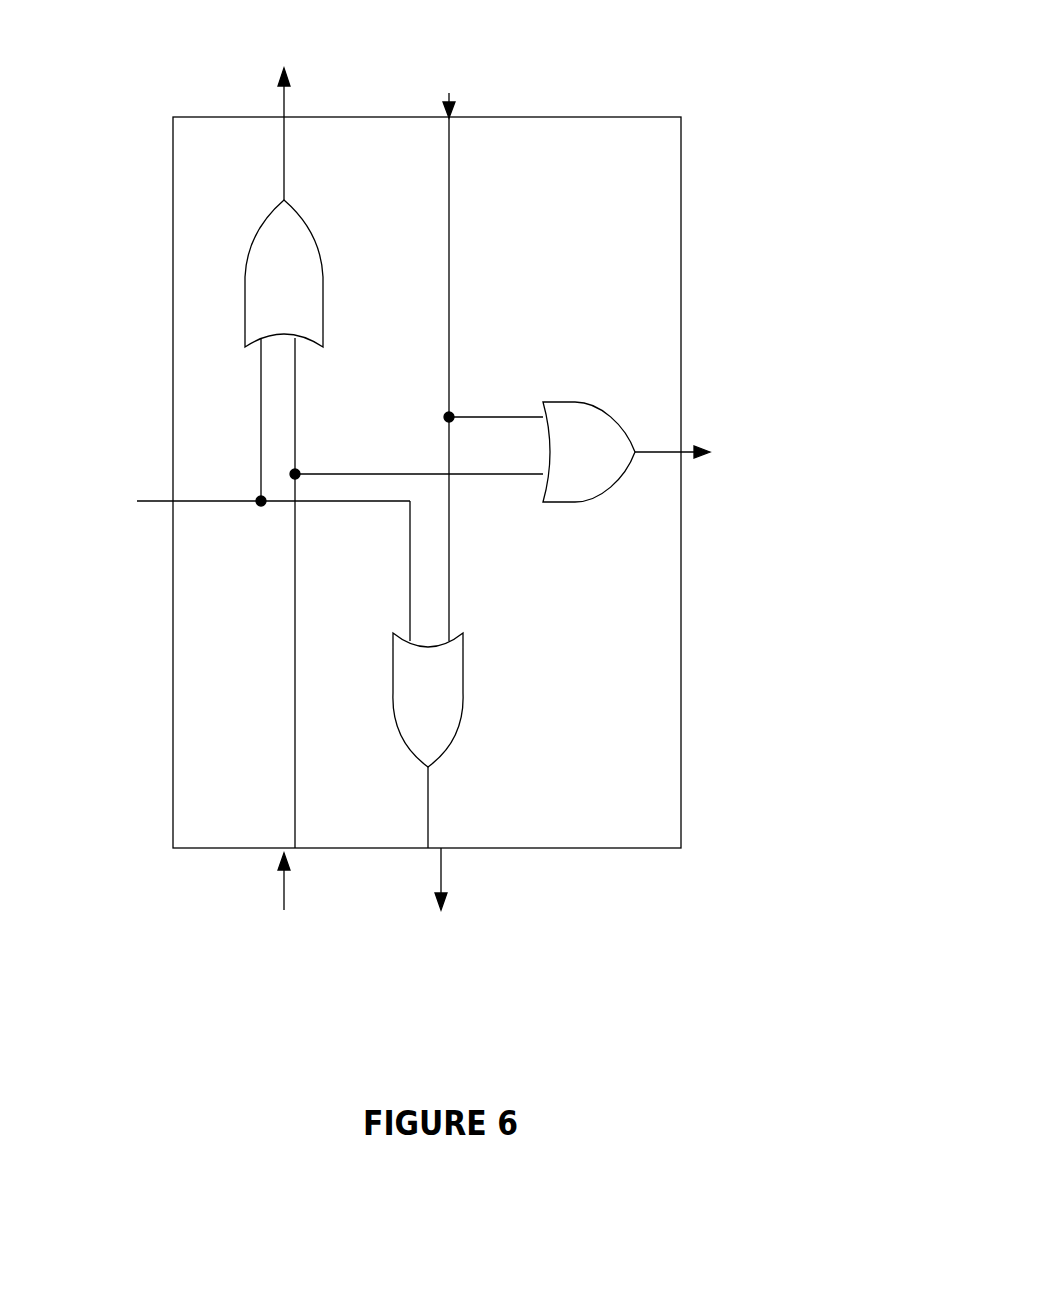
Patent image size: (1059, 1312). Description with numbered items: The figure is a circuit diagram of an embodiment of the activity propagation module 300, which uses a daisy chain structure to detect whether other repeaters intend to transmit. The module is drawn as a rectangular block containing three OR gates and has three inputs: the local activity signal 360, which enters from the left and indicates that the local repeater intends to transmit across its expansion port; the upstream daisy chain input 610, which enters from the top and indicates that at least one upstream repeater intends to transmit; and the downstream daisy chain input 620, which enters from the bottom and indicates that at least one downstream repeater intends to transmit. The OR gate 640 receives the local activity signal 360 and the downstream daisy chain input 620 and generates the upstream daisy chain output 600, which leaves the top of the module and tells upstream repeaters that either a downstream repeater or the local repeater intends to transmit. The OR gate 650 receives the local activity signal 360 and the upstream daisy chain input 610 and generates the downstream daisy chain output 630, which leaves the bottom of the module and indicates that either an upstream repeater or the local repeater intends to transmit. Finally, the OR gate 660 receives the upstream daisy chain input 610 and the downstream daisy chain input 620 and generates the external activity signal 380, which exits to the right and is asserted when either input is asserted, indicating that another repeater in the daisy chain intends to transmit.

The activity propagation module 300 is at (427, 482).
The local activity signal 360 is at (212, 562).
The external activity signal 380 is at (747, 444).
The upstream daisy chain output 600 is at (280, 102).
The upstream daisy chain input 610 is at (463, 67).
The downstream daisy chain input 620 is at (281, 914).
The downstream daisy chain output 630 is at (446, 914).
The OR gate 640 is at (284, 273).
The OR gate 650 is at (428, 700).
The OR gate 660 is at (589, 452).